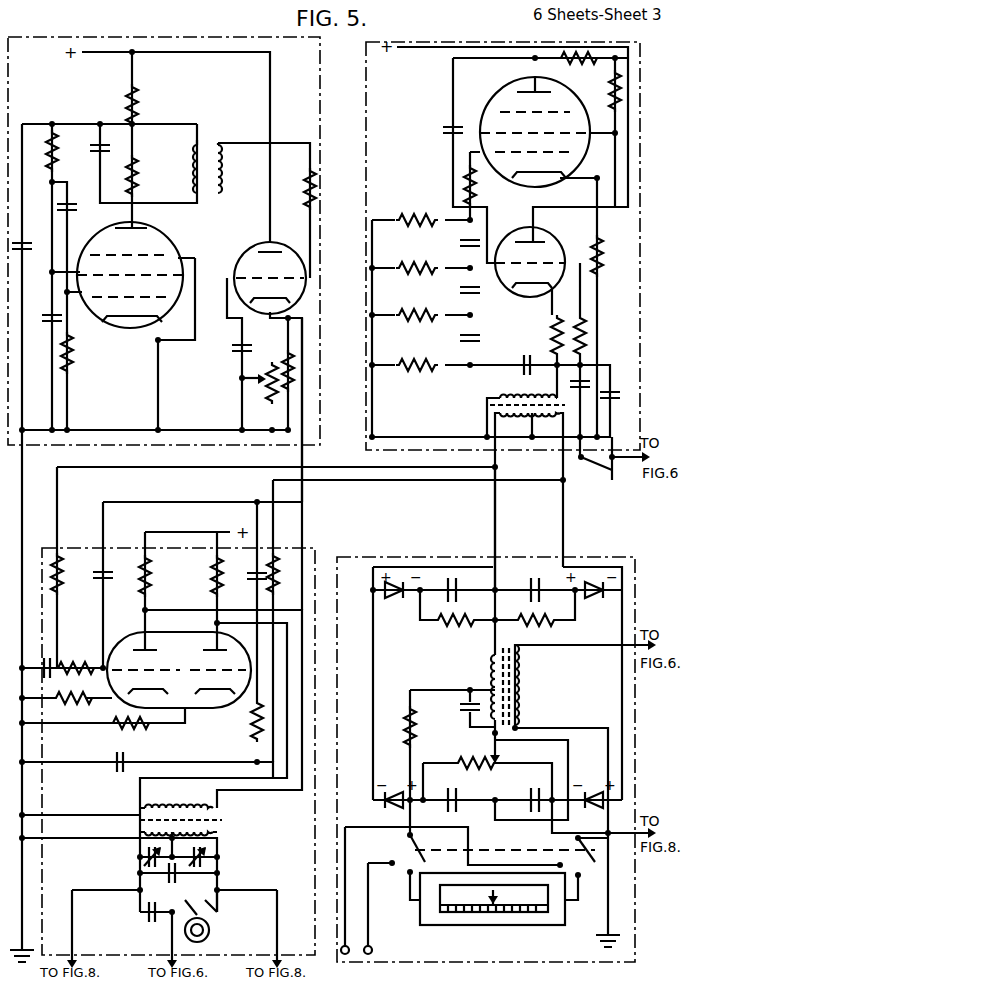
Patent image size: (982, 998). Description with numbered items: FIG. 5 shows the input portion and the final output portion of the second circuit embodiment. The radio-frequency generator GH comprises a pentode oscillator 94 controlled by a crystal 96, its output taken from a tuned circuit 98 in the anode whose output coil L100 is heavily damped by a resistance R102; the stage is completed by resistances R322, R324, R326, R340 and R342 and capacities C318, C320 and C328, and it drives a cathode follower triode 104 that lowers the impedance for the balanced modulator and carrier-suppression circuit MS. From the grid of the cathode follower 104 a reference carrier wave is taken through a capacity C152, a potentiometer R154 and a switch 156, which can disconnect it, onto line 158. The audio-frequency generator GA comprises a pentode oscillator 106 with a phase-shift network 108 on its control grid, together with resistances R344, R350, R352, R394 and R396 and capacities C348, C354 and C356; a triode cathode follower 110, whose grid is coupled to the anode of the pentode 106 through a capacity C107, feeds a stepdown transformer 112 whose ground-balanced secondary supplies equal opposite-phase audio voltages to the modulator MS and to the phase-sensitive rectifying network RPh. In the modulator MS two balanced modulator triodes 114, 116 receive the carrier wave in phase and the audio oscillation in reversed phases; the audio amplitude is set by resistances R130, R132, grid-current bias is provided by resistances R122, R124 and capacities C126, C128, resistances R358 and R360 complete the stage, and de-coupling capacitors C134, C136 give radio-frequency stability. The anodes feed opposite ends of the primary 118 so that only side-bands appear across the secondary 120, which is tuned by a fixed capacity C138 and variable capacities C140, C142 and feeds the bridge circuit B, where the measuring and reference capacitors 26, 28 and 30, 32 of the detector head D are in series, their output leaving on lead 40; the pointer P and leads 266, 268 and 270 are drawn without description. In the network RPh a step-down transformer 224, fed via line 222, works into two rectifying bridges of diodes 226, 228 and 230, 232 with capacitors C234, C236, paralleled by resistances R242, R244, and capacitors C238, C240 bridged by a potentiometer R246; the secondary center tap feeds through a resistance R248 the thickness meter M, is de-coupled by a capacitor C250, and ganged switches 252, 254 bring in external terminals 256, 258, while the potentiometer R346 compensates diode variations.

The radio-frequency generator GH is at (200, 96).
The audio-frequency generator GA is at (424, 102).
The balanced modulator and carrier-suppression circuit MS is at (196, 604).
The phase-sensitive rectifying network RPh is at (585, 699).
The resistance R322 is at (52, 150).
The capacity C328 is at (98, 142).
The resistance R326 is at (138, 94).
The output coil L100 is at (205, 140).
The resistance R340 is at (294, 164).
The damping resistance R102 is at (136, 168).
The tuned circuit 98 is at (176, 181).
The crystal 96 is at (78, 207).
The capacity C318 is at (42, 236).
The pentode oscillator 94 is at (160, 250).
The cathode follower triode 104 is at (281, 277).
The capacity C320 is at (60, 322).
The resistance R324 is at (70, 365).
The capacity C152 is at (268, 342).
The potentiometer R154 is at (268, 392).
The resistance R342 is at (300, 368).
The resistance R394 is at (574, 56).
The resistance R396 is at (610, 92).
The pentode oscillator 106 is at (547, 132).
The capacity C107 is at (448, 138).
The resistance R344 is at (465, 188).
The potentiometer R346 is at (590, 258).
The phase-shift network 108 is at (423, 305).
The triode cathode follower 110 is at (541, 265).
The resistance R352 is at (552, 322).
The resistance R350 is at (575, 340).
The capacity C354 is at (511, 360).
The capacity C356 is at (592, 386).
The capacity C348 is at (624, 400).
The stepdown transformer 112 is at (500, 394).
The switch 156 is at (592, 472).
The line 158 is at (629, 471).
The resistance R130 is at (72, 572).
The capacity C126 is at (112, 570).
The resistance R358 is at (212, 578).
The resistance R132 is at (280, 580).
The capacity C128 is at (256, 582).
The modulator triode 114 is at (158, 667).
The modulator triode 116 is at (228, 667).
The high-frequency de-coupling capacitor C134 is at (50, 660).
The grid current biasing resistance R122 is at (79, 676).
The resistance R360 is at (102, 710).
The high-frequency de-coupling capacitor C136 is at (116, 756).
The grid current biasing resistance R124 is at (254, 724).
The transformer primary 118 is at (178, 798).
The transformer secondary 120 is at (220, 838).
The variable capacity C140 is at (134, 852).
The variable capacity C142 is at (222, 873).
The fixed capacity C138 is at (136, 878).
The reference capacitor 28 is at (167, 905).
The measuring capacitor 26 is at (216, 922).
The pointer knob P is at (210, 930).
The lead 40 is at (198, 942).
The reference capacitor 32 is at (148, 922).
The measuring capacitor 30 is at (160, 922).
The lead to FIG. 8 266 is at (72, 920).
The lead to FIG. 8 268 is at (277, 924).
The bridge circuit B is at (207, 891).
The detector head D is at (262, 949).
The diode rectifier 226 is at (395, 578).
The capacitor C234 is at (446, 576).
The capacitor C236 is at (532, 576).
The diode rectifier 228 is at (594, 578).
The resistance R242 is at (472, 628).
The resistance R244 is at (530, 628).
The step-down transformer 224 is at (492, 680).
The line 222 is at (589, 663).
The A.C. de-coupling capacitor C250 is at (462, 706).
The resistance R248 is at (432, 727).
The potentiometer R246 is at (480, 760).
The diode rectifier 230 is at (396, 792).
The capacitor C238 is at (462, 788).
The capacitor C240 is at (532, 794).
The diode rectifier 232 is at (594, 792).
The lead to FIG. 8 270 is at (615, 830).
The ganged switch 252 is at (402, 851).
The ganged switch 254 is at (596, 858).
The thickness meter M is at (502, 951).
The external terminal 256 is at (345, 954).
The external terminal 258 is at (368, 954).